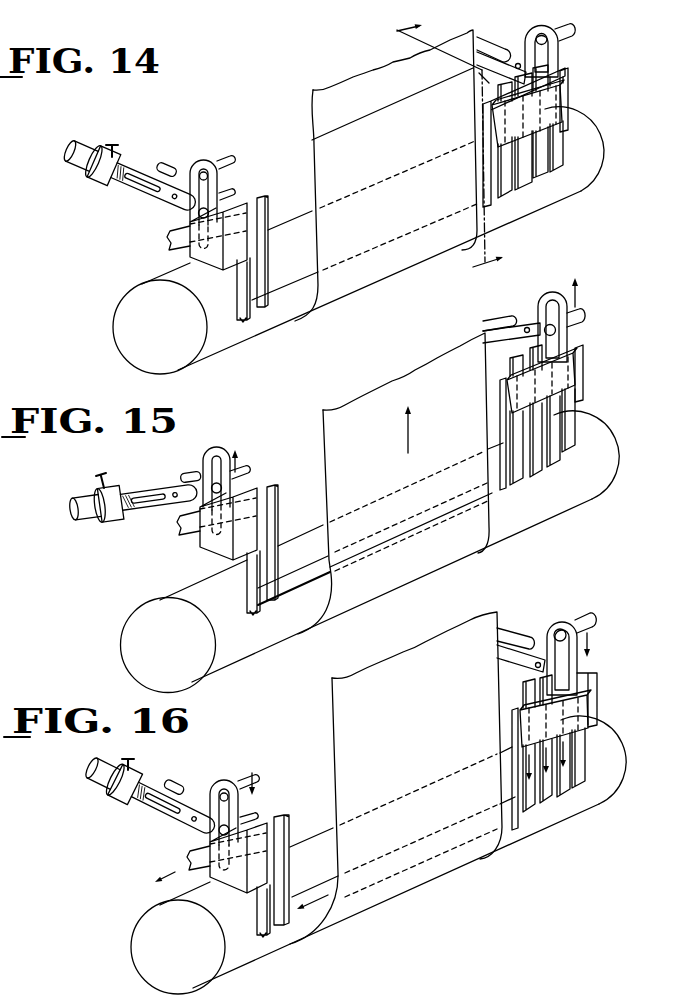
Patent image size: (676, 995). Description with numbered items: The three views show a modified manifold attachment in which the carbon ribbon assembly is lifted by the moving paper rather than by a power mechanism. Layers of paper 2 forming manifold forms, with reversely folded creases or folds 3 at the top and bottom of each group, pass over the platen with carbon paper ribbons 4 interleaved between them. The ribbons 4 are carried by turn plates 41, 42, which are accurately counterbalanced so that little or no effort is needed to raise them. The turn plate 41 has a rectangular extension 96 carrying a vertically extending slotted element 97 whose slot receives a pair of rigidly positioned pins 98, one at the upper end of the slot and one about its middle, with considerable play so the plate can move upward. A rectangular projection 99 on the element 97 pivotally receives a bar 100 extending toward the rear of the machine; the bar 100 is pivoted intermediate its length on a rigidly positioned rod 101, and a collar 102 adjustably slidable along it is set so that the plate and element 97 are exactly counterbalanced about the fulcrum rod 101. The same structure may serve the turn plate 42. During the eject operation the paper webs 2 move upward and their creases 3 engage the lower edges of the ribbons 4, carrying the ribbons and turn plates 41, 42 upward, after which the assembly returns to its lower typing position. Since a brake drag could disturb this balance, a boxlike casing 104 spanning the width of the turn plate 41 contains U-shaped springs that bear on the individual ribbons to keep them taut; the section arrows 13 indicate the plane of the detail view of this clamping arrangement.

In FIG. 14, the paper webs 2 is at (398, 153).
In FIG. 15, the paper webs 2 is at (452, 414).
In FIG. 16, the paper webs 2 is at (416, 699).
In FIG. 14, the creases or folds 3 is at (312, 141).
In FIG. 15, the creases or folds 3 is at (329, 570).
In FIG. 14, the carbon paper ribbons 4 is at (296, 282).
In FIG. 15, the carbon paper ribbons 4 is at (312, 571).
In FIG. 16, the carbon paper ribbons 4 is at (325, 893).
In FIG. 14, the section line 13- 13 is at (438, 153).
In FIG. 14, the turn plate 41 is at (553, 166).
In FIG. 15, the turn plate 41 is at (570, 456).
In FIG. 16, the turn plate 41 is at (583, 792).
In FIG. 14, the turn plate 42 is at (243, 324).
In FIG. 15, the turn plate 42 is at (254, 615).
In FIG. 16, the turn plate 42 is at (262, 938).
In FIG. 14, the rectangular extension 96 is at (566, 70).
In FIG. 15, the rectangular extension 96 is at (580, 348).
In FIG. 16, the rectangular extension 96 is at (588, 672).
In FIG. 14, the slotted element 97 is at (553, 29).
In FIG. 15, the slotted element 97 is at (563, 284).
In FIG. 16, the slotted element 97 is at (561, 624).
In FIG. 14, the pins 98 is at (573, 30).
In FIG. 15, the pins 98 is at (582, 316).
In FIG. 16, the pins 98 is at (586, 620).
In FIG. 14, the rectangular projection 99 is at (530, 36).
In FIG. 15, the rectangular projection 99 is at (538, 312).
In FIG. 14, the bar 100 is at (517, 52).
In FIG. 15, the bar 100 is at (510, 331).
In FIG. 16, the bar 100 is at (536, 666).
In FIG. 14, the rod 101 is at (492, 38).
In FIG. 15, the rod 101 is at (490, 343).
In FIG. 16, the rod 101 is at (531, 641).
In FIG. 14, the collar 102 is at (118, 160).
In FIG. 15, the collar 102 is at (118, 492).
In FIG. 16, the collar 102 is at (138, 778).
In FIG. 15, the boxlike casing 104 is at (572, 372).
In FIG. 16, the boxlike casing 104 is at (583, 711).